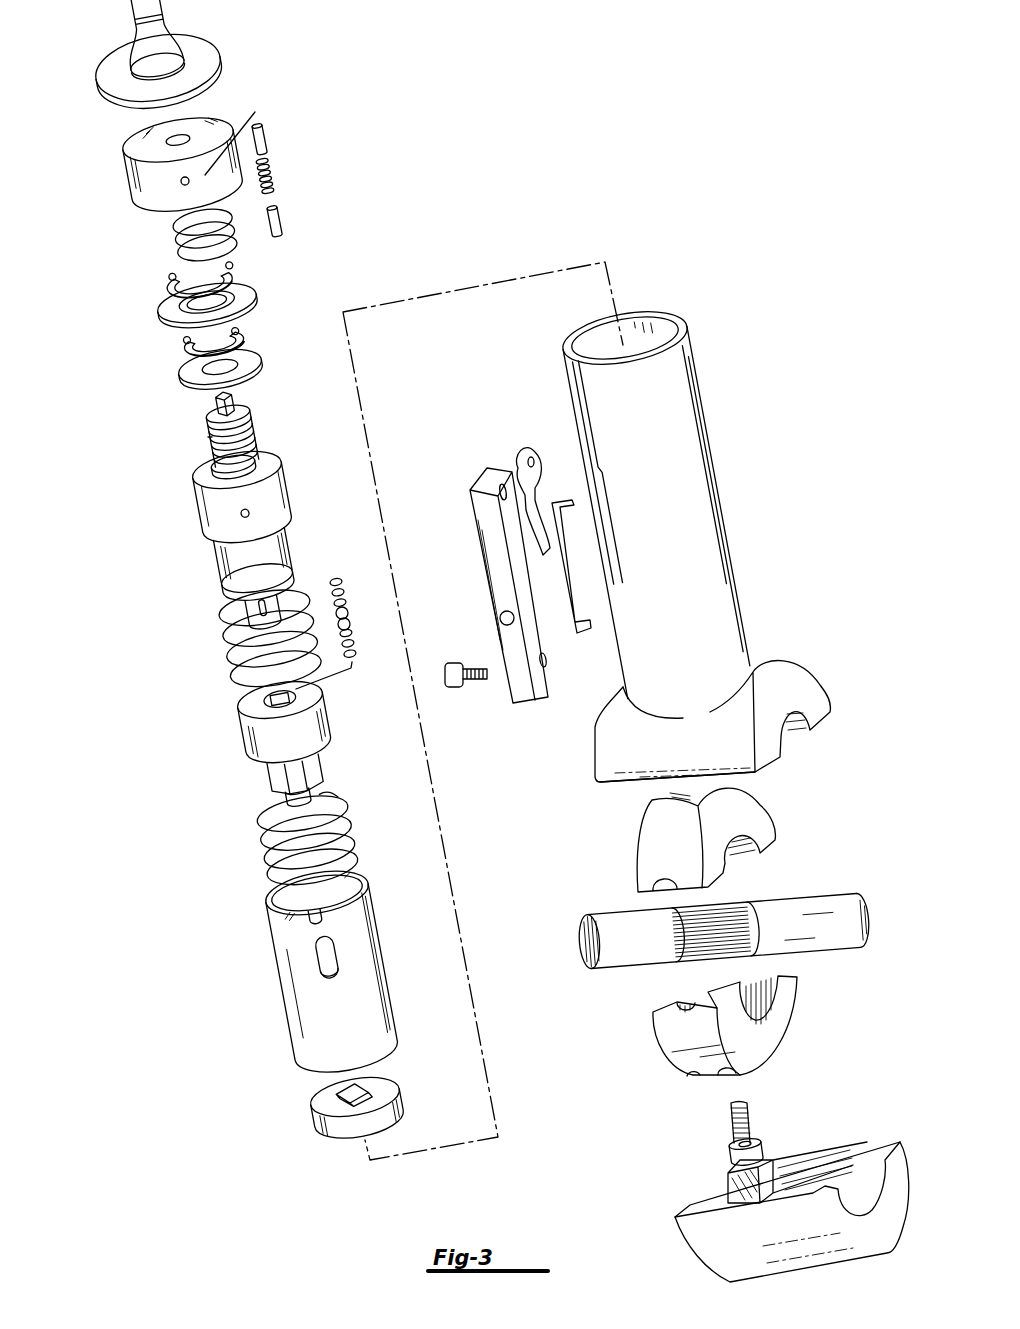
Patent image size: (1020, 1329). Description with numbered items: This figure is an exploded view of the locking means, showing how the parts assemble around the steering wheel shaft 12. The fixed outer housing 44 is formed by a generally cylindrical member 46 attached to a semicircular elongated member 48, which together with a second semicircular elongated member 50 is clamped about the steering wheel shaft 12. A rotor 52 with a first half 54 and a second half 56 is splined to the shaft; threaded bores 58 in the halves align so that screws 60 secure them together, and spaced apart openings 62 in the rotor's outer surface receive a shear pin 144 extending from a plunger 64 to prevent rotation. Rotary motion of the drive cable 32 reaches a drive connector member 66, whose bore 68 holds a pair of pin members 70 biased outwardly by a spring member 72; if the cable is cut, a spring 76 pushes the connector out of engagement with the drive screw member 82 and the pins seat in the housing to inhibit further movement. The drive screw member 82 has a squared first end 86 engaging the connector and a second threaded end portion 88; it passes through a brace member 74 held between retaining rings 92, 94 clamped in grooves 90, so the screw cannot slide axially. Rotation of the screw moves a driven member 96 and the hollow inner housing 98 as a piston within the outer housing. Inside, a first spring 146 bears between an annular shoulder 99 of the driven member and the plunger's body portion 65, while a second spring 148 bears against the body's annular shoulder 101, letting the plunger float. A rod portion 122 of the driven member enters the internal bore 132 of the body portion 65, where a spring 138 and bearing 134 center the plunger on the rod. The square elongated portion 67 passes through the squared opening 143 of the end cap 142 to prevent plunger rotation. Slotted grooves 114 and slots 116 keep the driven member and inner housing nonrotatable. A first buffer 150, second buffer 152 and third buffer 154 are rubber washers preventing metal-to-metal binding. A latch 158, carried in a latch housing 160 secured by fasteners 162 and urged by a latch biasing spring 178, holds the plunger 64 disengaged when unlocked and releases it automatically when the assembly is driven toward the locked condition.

The steering wheel shaft 12 is at (810, 898).
The drive cable 32 is at (143, 46).
The outer housing 44 is at (713, 467).
The generally cylindrical member 46 is at (724, 589).
The semicircular elongated member 48 is at (790, 680).
The second semicircular elongated member 50 is at (727, 1254).
The rotor 52 is at (630, 862).
The first half 54 is at (758, 820).
The second half 56 is at (794, 994).
The threaded bores 58 is at (697, 1082).
The screws 60 is at (732, 1128).
The openings 62 is at (683, 785).
The plunger 64 is at (250, 749).
The body portion 65 is at (322, 710).
The drive connector member 66 is at (125, 178).
The elongated portion 67 is at (316, 768).
The bore 68 is at (185, 182).
The pin members 70 is at (263, 136).
The spring member 72 is at (273, 183).
The brace member 74 is at (256, 305).
The spring 76 is at (238, 243).
The drive screw member 82 is at (256, 428).
The first end 86 is at (250, 402).
The second threaded end portion 88 is at (276, 449).
The grooves 90 is at (208, 437).
The retaining ring 92 is at (258, 283).
The retaining ring 94 is at (260, 342).
The driven member 96 is at (300, 502).
The inner housing 98 is at (380, 966).
The annular shoulder 99 is at (322, 745).
The annular shoulder 101 is at (268, 758).
The slotted grooves 114 is at (240, 517).
The slots 116 is at (318, 973).
The rod portion 122 is at (243, 592).
The internal bore 132 is at (305, 690).
The bearing 134 is at (350, 612).
The spring 138 is at (338, 643).
The end cap 142 is at (310, 1122).
The squared opening 143 is at (367, 1088).
The shear pin 144 is at (330, 797).
The first spring 146 is at (236, 640).
The second spring 148 is at (352, 834).
The first buffer 150 is at (263, 373).
The second buffer 152 is at (282, 555).
The third buffer 154 is at (284, 470).
The latch 158 is at (574, 608).
The latch housing 160 is at (523, 695).
The fasteners 162 is at (465, 688).
The latch biasing spring 178 is at (537, 452).